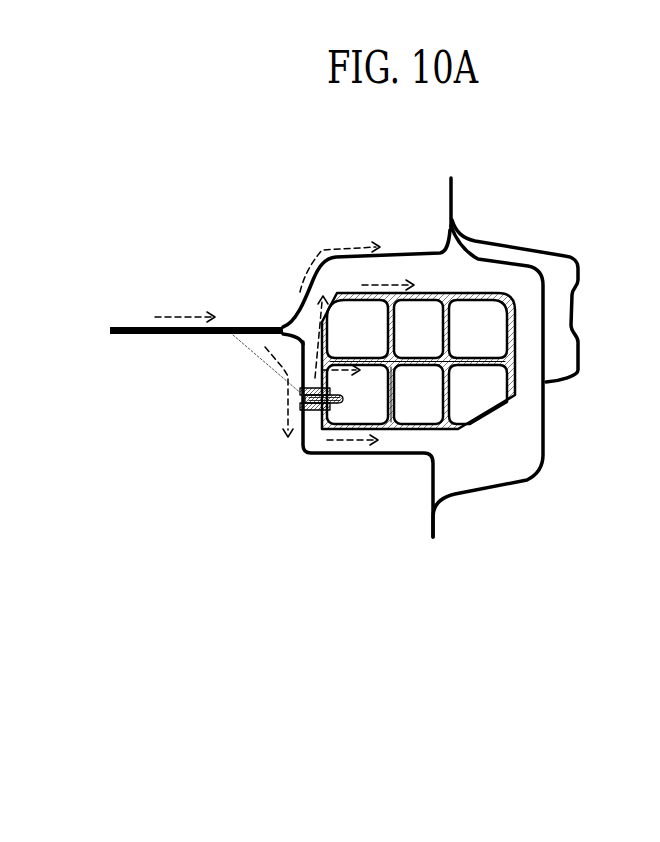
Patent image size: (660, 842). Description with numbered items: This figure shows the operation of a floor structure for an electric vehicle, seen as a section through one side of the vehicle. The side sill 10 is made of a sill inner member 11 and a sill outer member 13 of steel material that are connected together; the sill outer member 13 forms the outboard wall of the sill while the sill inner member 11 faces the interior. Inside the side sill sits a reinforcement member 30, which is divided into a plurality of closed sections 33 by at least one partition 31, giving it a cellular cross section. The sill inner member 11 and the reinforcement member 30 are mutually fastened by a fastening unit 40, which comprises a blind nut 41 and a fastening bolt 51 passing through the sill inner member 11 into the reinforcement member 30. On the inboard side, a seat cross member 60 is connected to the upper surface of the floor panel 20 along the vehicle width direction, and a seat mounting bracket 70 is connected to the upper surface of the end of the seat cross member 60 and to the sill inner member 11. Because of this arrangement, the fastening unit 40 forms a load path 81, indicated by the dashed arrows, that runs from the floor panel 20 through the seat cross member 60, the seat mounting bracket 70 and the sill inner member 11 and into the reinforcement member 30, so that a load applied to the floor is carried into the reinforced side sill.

The side sill 10 is at (550, 474).
The sill inner member 11 is at (337, 456).
The sill outer member 13 is at (546, 458).
The floor panel 20 is at (280, 360).
The reinforcement member 30 is at (390, 445).
The partition 31 is at (396, 394).
The closed section 33 is at (368, 388).
The fastening unit 40 is at (310, 422).
The blind nut 41 is at (312, 372).
The fastening bolt 51 is at (275, 405).
The seat cross member 60 is at (272, 345).
The seat mounting bracket 70 is at (288, 305).
The load path 81 is at (347, 247).